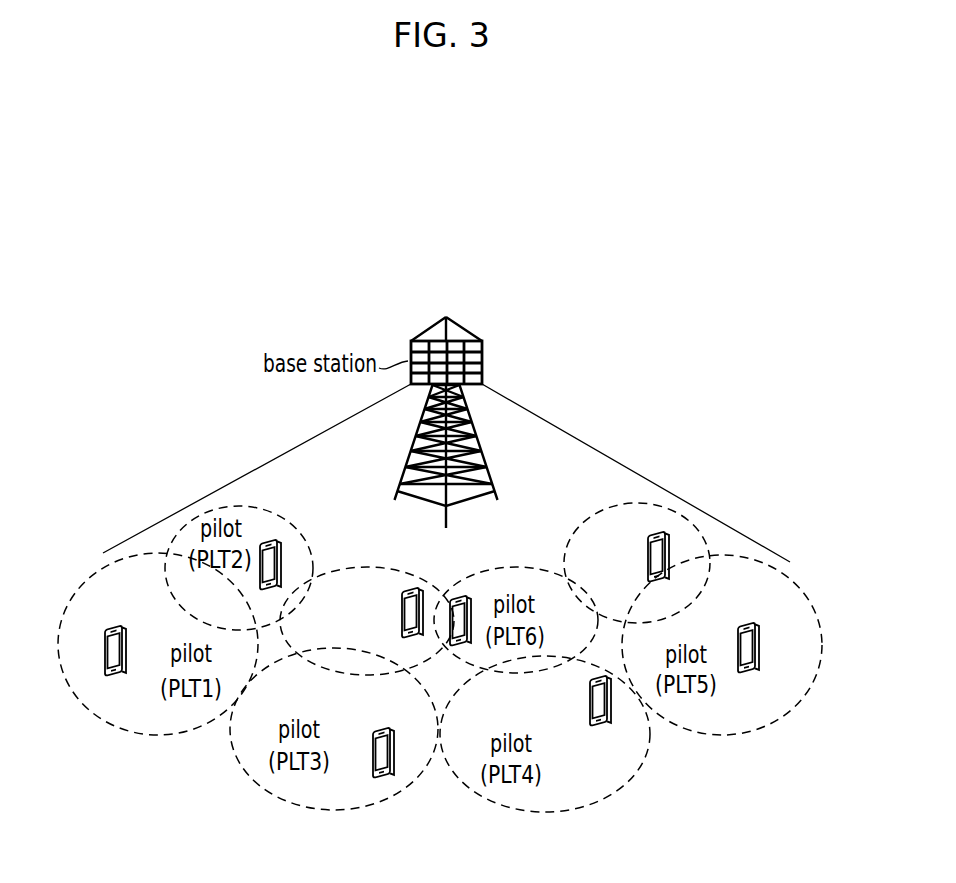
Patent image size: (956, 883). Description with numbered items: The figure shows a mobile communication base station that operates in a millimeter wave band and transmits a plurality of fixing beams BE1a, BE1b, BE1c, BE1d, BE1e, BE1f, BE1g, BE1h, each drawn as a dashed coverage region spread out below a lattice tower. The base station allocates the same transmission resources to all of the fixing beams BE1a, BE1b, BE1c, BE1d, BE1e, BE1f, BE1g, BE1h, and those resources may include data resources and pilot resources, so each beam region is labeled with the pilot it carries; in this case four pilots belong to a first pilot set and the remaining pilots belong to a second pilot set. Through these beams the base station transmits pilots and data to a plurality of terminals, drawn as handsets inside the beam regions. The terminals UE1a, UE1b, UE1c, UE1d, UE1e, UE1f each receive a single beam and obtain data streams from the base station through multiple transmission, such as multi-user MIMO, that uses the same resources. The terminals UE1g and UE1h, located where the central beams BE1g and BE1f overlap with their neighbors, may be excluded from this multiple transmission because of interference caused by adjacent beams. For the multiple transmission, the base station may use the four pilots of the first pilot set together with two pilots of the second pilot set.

The fixing beam BE1a is at (118, 553).
The fixing beam BE1b is at (338, 811).
The fixing beam BE1c is at (543, 812).
The fixing beam BE1d is at (749, 556).
The fixing beam BE1e is at (217, 507).
The fixing beam BE1f is at (522, 567).
The fixing beam BE1g is at (391, 568).
The fixing beam BE1h is at (616, 504).
The terminal UE1a is at (128, 606).
The terminal UE1b is at (395, 710).
The terminal UE1c is at (590, 697).
The terminal UE1d is at (762, 605).
The terminal UE1e is at (268, 540).
The terminal UE1f is at (464, 597).
The terminal UE1g is at (402, 609).
The terminal UE1h is at (660, 530).